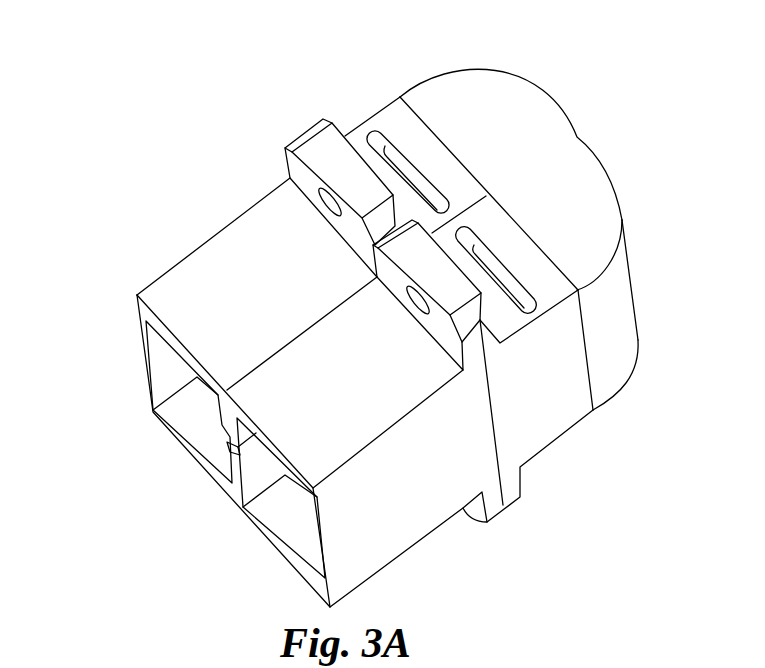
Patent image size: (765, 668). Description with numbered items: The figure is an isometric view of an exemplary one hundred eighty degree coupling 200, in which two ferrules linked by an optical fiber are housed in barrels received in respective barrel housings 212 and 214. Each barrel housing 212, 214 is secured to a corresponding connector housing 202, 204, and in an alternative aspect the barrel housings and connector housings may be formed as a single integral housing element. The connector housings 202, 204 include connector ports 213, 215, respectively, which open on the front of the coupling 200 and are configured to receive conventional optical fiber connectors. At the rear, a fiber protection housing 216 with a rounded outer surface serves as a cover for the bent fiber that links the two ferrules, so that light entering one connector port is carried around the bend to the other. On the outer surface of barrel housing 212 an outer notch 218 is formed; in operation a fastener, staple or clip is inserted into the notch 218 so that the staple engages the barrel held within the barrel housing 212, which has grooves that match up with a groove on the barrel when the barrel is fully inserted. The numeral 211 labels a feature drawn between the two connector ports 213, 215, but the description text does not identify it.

The 180 degree coupling 200 is at (138, 212).
The connector housing 202 is at (270, 215).
The connector housing 204 is at (405, 520).
The key / latch between cavities 211 is at (230, 450).
The barrel housing 212 is at (415, 118).
The connector port 213 is at (168, 370).
The barrel housing 214 is at (537, 415).
The connector port 215 is at (282, 518).
The fiber protection housing 216 is at (558, 150).
The outer notch 218 is at (388, 158).